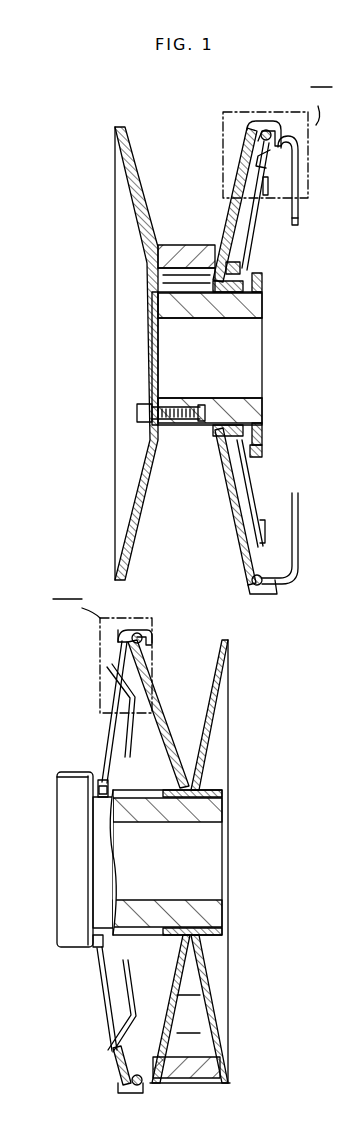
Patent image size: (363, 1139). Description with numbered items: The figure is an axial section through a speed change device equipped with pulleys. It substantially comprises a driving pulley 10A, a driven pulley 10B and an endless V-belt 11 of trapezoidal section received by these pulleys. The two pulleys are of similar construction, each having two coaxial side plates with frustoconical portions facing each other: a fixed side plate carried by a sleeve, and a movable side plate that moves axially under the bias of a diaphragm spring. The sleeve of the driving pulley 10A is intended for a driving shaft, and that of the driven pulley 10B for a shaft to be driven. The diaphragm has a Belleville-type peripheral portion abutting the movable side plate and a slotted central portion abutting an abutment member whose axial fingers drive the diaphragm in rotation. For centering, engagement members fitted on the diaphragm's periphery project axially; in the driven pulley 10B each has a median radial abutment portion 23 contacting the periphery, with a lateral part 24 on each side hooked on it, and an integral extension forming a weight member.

The driving pulley 10A is at (233, 829).
The driven pulley 10B is at (112, 280).
The endless V-belt 11 is at (168, 240).
The radial abutment portion 23 is at (270, 188).
The lateral part 24 is at (256, 160).